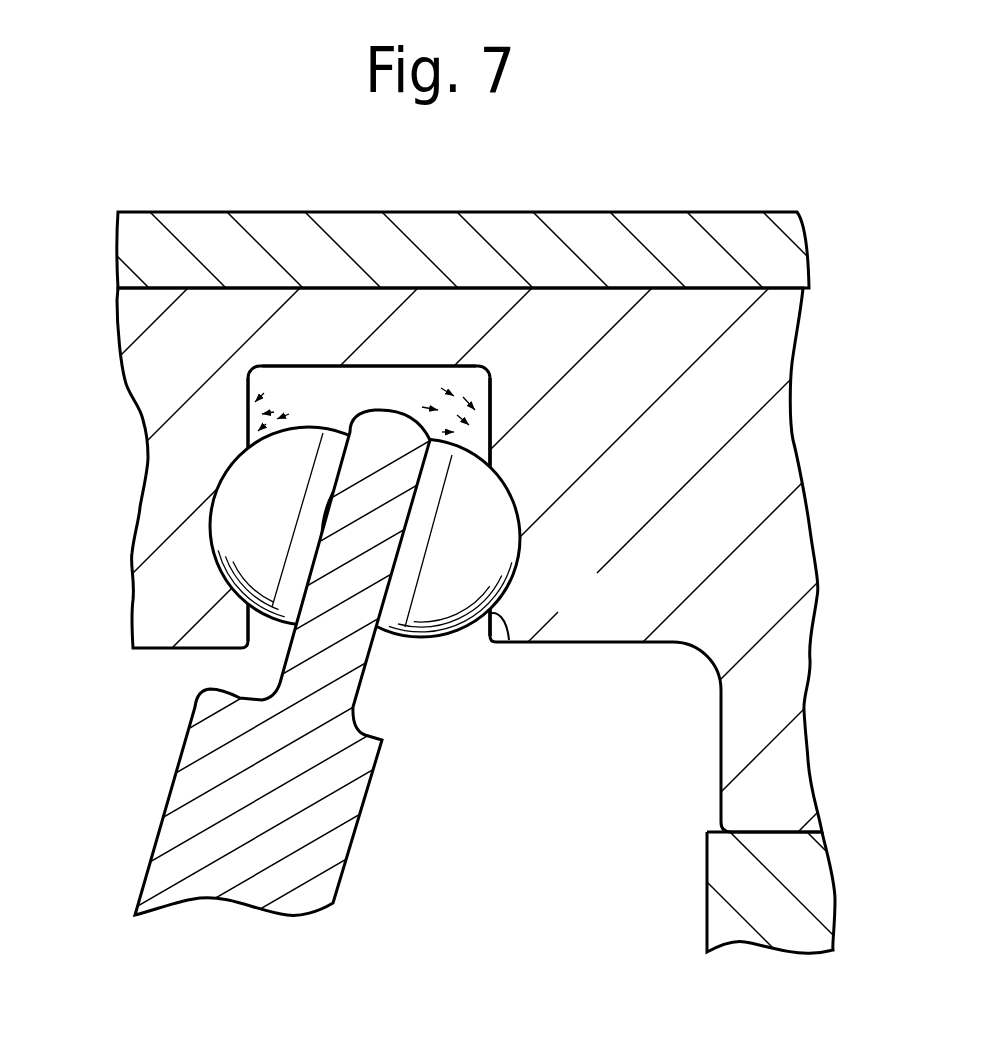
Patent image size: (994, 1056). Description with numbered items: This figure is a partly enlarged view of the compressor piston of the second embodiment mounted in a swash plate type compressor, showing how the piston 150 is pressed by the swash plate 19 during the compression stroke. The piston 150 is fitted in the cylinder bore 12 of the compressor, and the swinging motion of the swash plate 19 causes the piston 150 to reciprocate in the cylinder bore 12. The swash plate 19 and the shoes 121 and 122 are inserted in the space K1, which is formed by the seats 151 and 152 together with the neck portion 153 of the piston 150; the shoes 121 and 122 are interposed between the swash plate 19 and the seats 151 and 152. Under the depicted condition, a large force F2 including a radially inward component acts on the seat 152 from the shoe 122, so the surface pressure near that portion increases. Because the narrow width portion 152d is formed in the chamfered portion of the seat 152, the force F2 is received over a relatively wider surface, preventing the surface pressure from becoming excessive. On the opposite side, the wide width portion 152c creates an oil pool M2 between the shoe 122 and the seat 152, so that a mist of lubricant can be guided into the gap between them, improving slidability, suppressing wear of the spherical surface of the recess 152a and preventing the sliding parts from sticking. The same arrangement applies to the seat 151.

The cylinder bore 12 is at (747, 290).
The swash plate 19 is at (160, 816).
The shoe 121 is at (217, 560).
The shoe 122 is at (422, 640).
The piston 150 is at (777, 375).
The seat 151 is at (218, 584).
The seat 152 is at (518, 597).
The recess 152a is at (523, 537).
The wide width portion 152c is at (507, 457).
The narrow width portion 152d is at (508, 640).
The neck portion 153 is at (432, 325).
The space K1 is at (330, 401).
The oil pool M2 is at (493, 438).
The force F2 is at (465, 572).